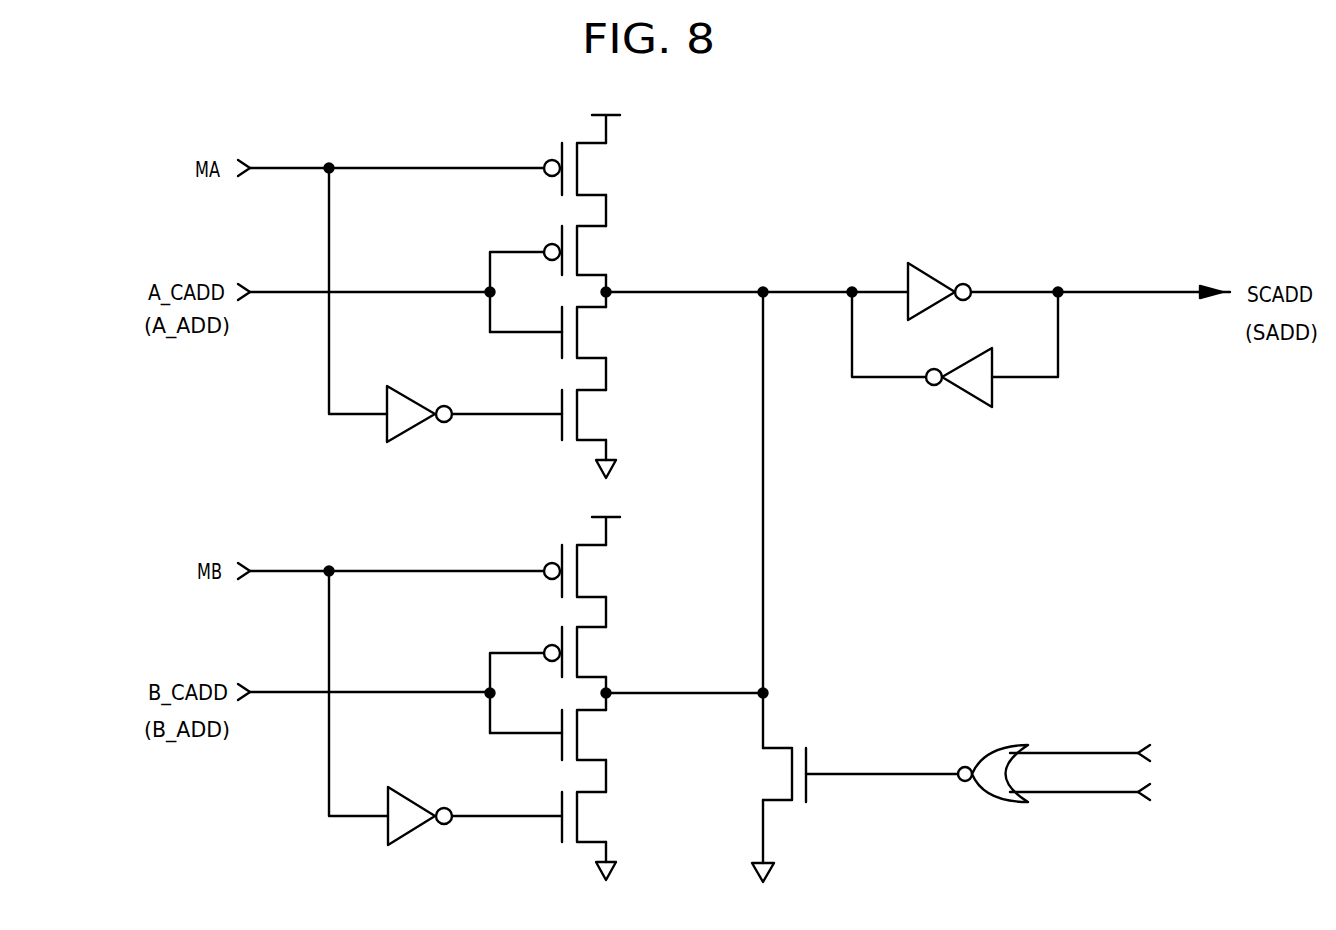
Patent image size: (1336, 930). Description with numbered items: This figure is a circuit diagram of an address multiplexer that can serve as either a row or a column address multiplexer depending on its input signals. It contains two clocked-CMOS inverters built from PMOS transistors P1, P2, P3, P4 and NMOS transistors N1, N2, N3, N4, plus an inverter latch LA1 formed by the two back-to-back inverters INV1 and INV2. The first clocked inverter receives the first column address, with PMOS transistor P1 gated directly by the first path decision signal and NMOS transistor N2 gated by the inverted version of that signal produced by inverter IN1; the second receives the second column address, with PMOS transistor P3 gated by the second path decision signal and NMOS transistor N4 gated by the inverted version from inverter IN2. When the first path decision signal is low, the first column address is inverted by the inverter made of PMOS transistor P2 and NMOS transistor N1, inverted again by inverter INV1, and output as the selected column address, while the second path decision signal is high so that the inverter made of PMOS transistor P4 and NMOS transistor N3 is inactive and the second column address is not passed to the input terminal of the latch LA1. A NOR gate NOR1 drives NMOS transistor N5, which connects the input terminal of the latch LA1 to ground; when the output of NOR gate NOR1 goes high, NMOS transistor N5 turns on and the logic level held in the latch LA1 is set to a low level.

The PMOS transistor P1 is at (584, 169).
The PMOS transistor P2 is at (557, 279).
The NMOS transistor N1 is at (556, 332).
The NMOS transistor N2 is at (537, 415).
The inverter IN1 is at (415, 425).
The PMOS transistor P3 is at (584, 571).
The PMOS transistor P4 is at (557, 680).
The NMOS transistor N3 is at (556, 735).
The NMOS transistor N4 is at (537, 817).
The inverter IN2 is at (413, 830).
The inverter INV1 is at (942, 270).
The inverter INV2 is at (967, 397).
The inverter latch LA1 is at (966, 355).
The NMOS transistor N5 is at (851, 815).
The NOR gate NOR1 is at (988, 745).